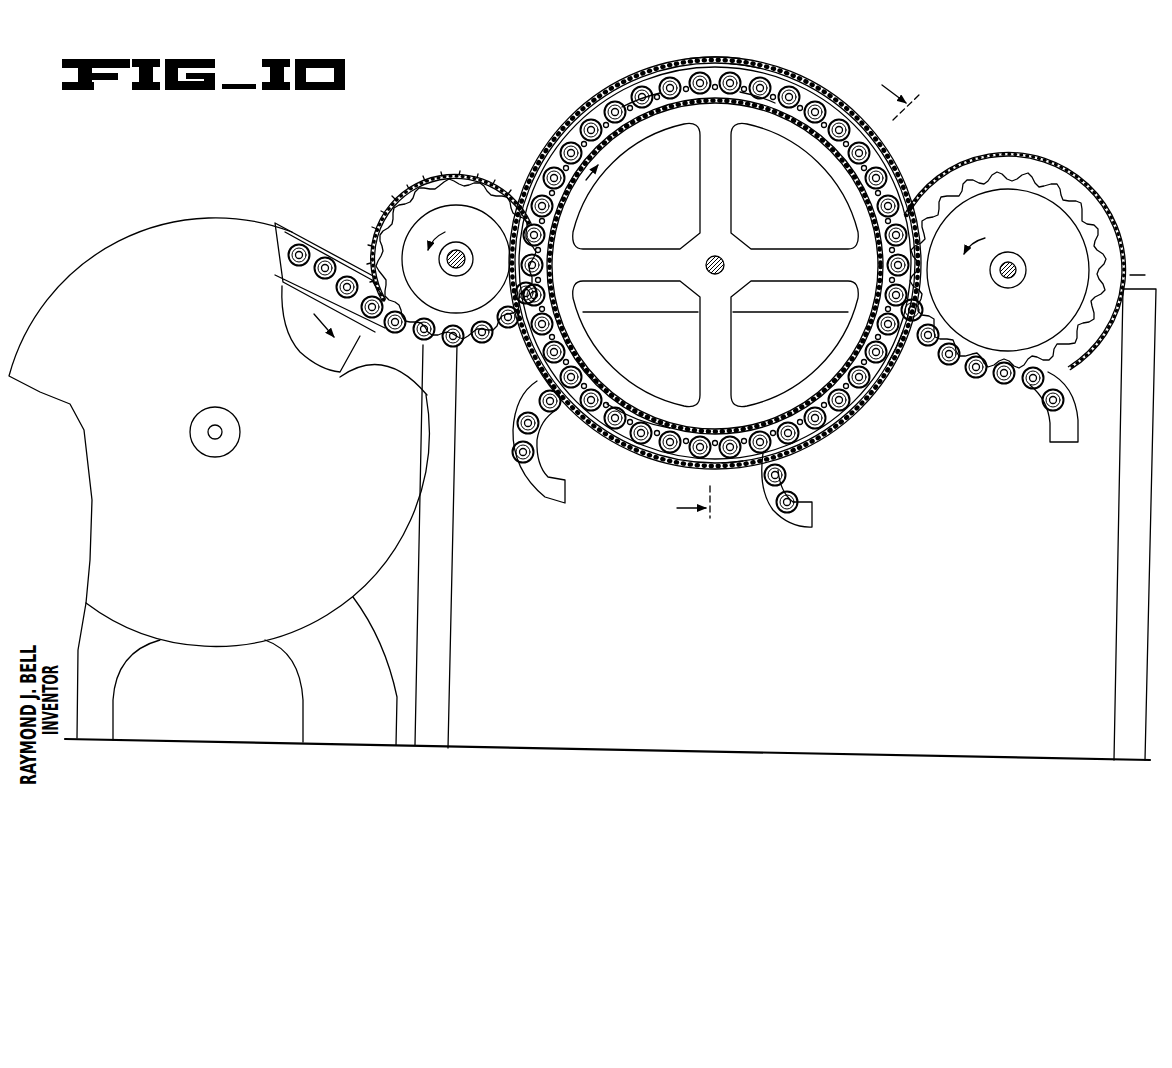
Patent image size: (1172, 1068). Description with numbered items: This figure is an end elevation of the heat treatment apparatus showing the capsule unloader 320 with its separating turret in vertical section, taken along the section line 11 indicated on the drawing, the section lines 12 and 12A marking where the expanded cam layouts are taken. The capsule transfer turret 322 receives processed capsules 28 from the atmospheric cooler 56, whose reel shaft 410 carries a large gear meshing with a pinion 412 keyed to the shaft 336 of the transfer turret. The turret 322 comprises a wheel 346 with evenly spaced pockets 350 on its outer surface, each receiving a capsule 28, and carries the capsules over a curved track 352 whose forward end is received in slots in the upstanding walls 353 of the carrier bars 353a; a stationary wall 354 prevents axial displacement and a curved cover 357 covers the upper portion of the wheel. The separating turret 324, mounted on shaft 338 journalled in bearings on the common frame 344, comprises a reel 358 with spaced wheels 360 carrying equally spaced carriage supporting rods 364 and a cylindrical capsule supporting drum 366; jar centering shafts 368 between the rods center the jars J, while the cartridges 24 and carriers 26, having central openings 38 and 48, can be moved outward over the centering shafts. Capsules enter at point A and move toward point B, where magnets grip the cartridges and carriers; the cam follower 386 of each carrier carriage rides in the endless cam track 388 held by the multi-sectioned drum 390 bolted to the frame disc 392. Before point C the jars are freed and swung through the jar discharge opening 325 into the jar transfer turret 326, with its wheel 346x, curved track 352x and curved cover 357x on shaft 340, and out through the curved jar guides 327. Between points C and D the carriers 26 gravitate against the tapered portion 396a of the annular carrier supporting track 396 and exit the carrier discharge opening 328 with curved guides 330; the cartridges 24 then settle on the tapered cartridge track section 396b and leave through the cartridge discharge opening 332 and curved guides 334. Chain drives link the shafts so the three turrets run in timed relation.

The capsule unloader 320 is at (858, 78).
The capsule transfer turret 322 is at (421, 227).
The separating turret 324 is at (822, 86).
The jar discharge opening 325 is at (924, 254).
The jar transfer turret 326 is at (1017, 303).
The curved jar guides 327 is at (1052, 444).
The carrier discharge opening 328 is at (792, 472).
The curved guides 330 is at (804, 500).
The cartridge discharge opening 332 is at (548, 425).
The curved guides 334 is at (552, 500).
The shaft 336 is at (459, 254).
The shaft 338 is at (726, 265).
The shaft 340 is at (1012, 262).
The frame 344 is at (448, 620).
The wheel 346 is at (440, 296).
The wheel 346x is at (995, 360).
The pockets 350 is at (503, 178).
The curved track 352 is at (423, 389).
The curved track 352x is at (978, 386).
The upstanding walls 353 is at (296, 287).
The carrier bars 353a is at (316, 302).
The stationary wall 354 is at (424, 190).
The curved cover 357 is at (422, 180).
The curved cover 357x is at (1005, 156).
The reel 358 is at (704, 357).
The wheel 360 is at (700, 208).
The carriage supporting rods 364 is at (690, 122).
The cylindrical capsule supporting drum 366 is at (752, 118).
The jar centering shafts 368 is at (580, 366).
The cam follower 386 is at (548, 340).
The cam track 388 is at (540, 388).
The multi-sectioned drum 390 is at (745, 47).
The disc 392 is at (800, 229).
The annular carrier supporting track 396 is at (752, 72).
The tapered portion 396a is at (912, 346).
The tapered cartridge track section 396b is at (736, 458).
The reel shaft 410 is at (216, 424).
The pinion 412 is at (412, 226).
The atmospheric cooler 56 is at (222, 500).
The conveyor chain 12 is at (647, 292).
The conveyor chain run 12A is at (544, 364).
The cartridges 24 is at (514, 452).
The carriers 26 is at (606, 108).
The capsules 28 is at (566, 124).
The opening 38 is at (645, 452).
The opening 48 is at (868, 393).
The section line 11 is at (798, 301).
The point A is at (560, 258).
The point B is at (710, 56).
The point C is at (882, 265).
The point D is at (716, 426).
The jars J is at (660, 110).